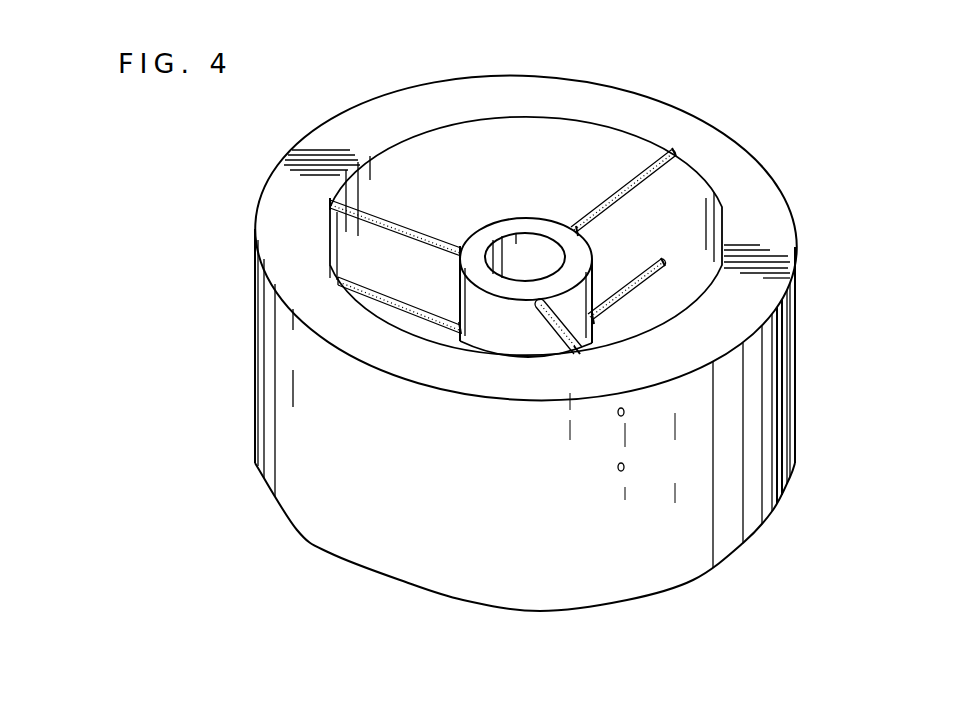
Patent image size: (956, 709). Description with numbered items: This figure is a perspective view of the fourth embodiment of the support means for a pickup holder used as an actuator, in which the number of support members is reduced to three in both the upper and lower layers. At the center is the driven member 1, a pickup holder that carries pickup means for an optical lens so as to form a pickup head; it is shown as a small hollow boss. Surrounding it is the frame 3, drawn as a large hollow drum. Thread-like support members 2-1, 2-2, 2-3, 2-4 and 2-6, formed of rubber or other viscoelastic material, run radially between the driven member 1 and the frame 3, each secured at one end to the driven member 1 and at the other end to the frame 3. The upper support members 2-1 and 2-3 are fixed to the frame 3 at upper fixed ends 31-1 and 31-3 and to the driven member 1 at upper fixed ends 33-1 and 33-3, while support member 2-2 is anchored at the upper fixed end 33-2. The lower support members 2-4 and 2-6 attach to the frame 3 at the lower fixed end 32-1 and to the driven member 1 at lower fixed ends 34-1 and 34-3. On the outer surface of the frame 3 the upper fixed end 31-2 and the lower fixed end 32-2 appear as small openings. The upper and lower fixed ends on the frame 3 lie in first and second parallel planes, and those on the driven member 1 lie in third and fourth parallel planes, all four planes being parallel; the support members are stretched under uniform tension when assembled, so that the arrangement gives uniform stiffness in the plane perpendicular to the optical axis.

The driven member 1 is at (512, 226).
The support member 2-1 is at (630, 186).
The support member 2-2 is at (553, 330).
The support member 2-3 is at (388, 220).
The support member 2-4 is at (639, 274).
The support member 2-6 is at (372, 281).
The frame 3 is at (348, 130).
The upper fixed end 31-1 is at (678, 153).
The upper fixed end 31-2 is at (624, 412).
The upper fixed end 31-3 is at (330, 204).
The lower fixed end 32-1 is at (664, 259).
The lower fixed end 32-2 is at (624, 467).
The upper fixed end 33-1 is at (576, 230).
The upper fixed end 33-2 is at (579, 350).
The upper fixed end 33-3 is at (461, 251).
The lower fixed end 34-1 is at (622, 333).
The lower fixed end 34-3 is at (458, 318).